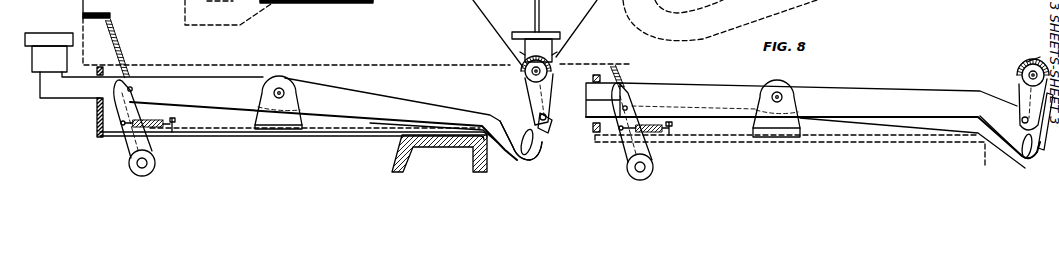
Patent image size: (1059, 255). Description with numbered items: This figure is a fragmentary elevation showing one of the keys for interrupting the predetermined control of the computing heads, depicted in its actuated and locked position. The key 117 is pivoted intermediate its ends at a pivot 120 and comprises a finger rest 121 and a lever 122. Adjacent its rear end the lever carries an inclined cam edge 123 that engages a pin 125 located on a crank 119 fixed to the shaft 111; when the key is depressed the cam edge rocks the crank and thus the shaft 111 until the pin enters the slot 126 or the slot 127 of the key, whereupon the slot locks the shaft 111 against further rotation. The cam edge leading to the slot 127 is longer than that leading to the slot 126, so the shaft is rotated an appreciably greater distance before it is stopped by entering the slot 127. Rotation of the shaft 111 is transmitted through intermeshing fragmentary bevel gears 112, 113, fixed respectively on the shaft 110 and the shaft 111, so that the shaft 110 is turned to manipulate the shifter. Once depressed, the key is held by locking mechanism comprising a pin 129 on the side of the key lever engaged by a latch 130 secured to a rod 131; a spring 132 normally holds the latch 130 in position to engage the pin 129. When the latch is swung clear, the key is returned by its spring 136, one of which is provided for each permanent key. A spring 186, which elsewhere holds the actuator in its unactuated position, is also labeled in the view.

The shaft 110 is at (537, 1).
The shaft 111 is at (533, 80).
The fragmentary bevel gear 112 is at (552, 60).
The fragmentary bevel gear 113 is at (557, 62).
The key 117 is at (43, 93).
The crank 119 is at (550, 97).
The pivot 120 is at (280, 88).
The finger rest 121 is at (43, 38).
The lever 122 is at (897, 79).
The cam edge 123 is at (540, 133).
The pin 125 is at (541, 116).
The slot 126 is at (542, 150).
The slot 127 is at (527, 145).
The pin 129 is at (138, 86).
The latch 130 is at (120, 137).
The rod 131 is at (148, 163).
The spring 132 is at (166, 123).
The spring 136 is at (621, 82).
The spring 186 is at (331, 1).